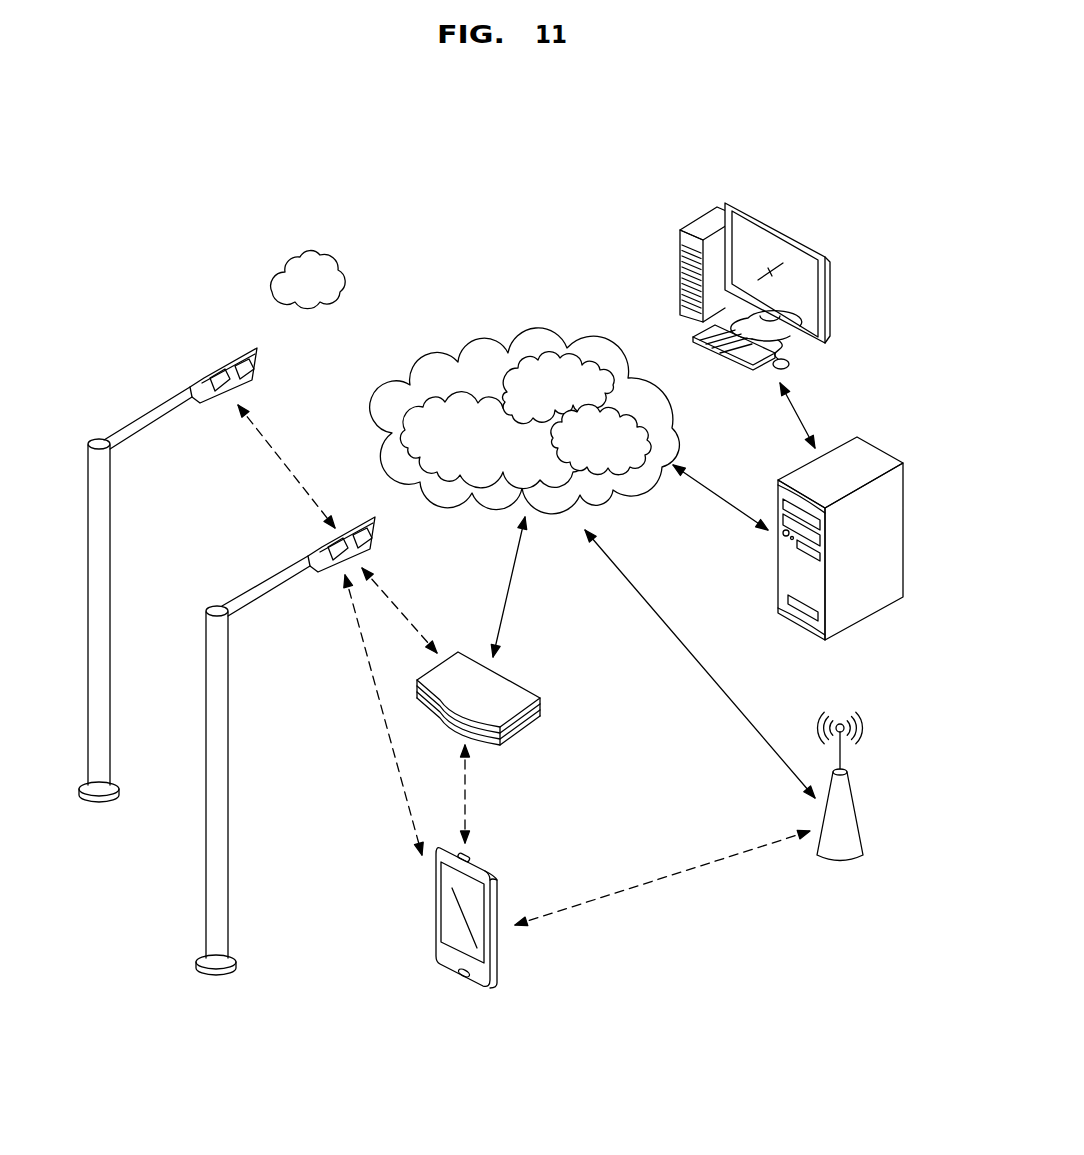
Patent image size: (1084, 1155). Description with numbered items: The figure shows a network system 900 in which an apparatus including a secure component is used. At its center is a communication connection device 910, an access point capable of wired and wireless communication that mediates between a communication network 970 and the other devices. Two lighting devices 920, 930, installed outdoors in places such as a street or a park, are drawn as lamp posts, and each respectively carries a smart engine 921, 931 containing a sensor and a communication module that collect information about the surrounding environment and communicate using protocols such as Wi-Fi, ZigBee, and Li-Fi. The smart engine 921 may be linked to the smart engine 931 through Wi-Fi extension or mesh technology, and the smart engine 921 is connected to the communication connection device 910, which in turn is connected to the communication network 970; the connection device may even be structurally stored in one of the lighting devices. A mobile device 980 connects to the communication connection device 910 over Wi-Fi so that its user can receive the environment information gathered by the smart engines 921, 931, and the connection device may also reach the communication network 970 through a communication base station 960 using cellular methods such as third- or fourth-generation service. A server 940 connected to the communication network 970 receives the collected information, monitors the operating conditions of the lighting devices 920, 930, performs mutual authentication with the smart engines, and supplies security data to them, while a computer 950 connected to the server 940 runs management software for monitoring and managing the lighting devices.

The network system 900 is at (834, 158).
The communication connection device 910 is at (498, 673).
The lighting device 920 is at (263, 587).
The smart engine 921 is at (362, 528).
The lighting device 930 is at (150, 423).
The smart engine 931 is at (242, 352).
The server 940 is at (880, 448).
The computer 950 is at (782, 231).
The communication base station 960 is at (840, 867).
The communication network 970 is at (538, 323).
The mobile device 980 is at (477, 858).